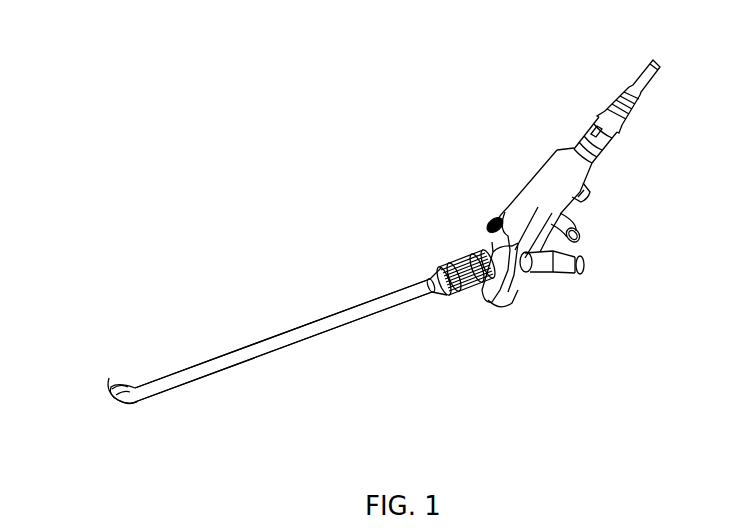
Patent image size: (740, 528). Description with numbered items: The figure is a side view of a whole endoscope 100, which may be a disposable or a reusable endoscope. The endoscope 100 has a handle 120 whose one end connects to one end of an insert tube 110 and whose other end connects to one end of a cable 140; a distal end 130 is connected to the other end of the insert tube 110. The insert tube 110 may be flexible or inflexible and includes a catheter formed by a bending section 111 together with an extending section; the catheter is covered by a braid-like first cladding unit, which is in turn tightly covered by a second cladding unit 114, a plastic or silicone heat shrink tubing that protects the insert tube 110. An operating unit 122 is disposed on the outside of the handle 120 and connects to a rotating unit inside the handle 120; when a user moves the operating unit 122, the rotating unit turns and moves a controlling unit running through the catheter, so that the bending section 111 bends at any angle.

The endoscope 100 is at (106, 82).
The insert tube 110 is at (288, 31).
The bending section 111 is at (127, 387).
The second cladding unit 114 is at (317, 393).
The handle 120 is at (525, 277).
The operating unit 122 is at (455, 296).
The distal end 130 is at (110, 377).
The cable 140 is at (645, 66).